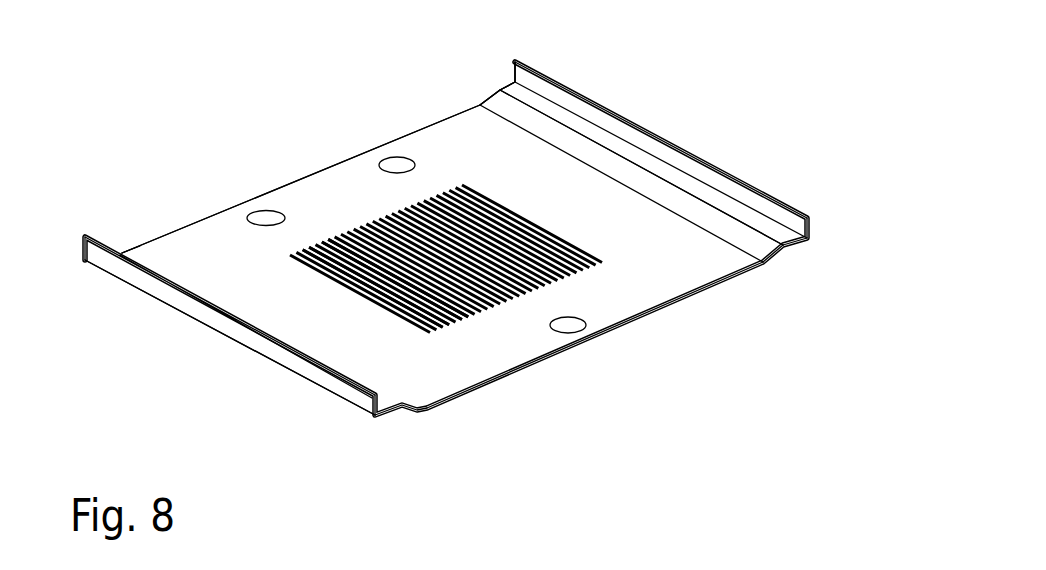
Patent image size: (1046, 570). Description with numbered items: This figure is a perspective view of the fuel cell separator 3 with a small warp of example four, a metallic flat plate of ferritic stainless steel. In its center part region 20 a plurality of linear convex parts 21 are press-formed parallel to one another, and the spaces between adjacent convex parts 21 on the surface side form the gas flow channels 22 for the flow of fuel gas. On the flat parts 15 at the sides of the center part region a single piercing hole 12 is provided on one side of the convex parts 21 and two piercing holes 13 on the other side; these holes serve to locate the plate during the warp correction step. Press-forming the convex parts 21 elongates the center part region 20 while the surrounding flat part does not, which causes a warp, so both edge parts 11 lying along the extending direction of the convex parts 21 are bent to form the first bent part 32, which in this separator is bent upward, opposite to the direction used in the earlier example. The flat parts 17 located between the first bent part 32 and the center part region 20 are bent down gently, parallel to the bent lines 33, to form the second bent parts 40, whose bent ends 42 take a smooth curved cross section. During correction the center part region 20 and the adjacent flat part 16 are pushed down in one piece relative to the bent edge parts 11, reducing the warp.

The fuel cell separator 3 is at (676, 109).
The edge parts 11 is at (582, 110).
The piercing hole 12 is at (583, 315).
The piercing holes 13 is at (272, 210).
The flat parts 15 is at (612, 308).
The flat part 16 is at (593, 197).
The flat parts 17 is at (723, 210).
The center part region 20 is at (418, 207).
The convex parts 21 is at (472, 317).
The gas flow channels 22 is at (443, 330).
The first bent part 32 is at (790, 224).
The bent lines 33 is at (810, 248).
The second bent parts 40 is at (763, 258).
The bent ends 42 is at (527, 136).